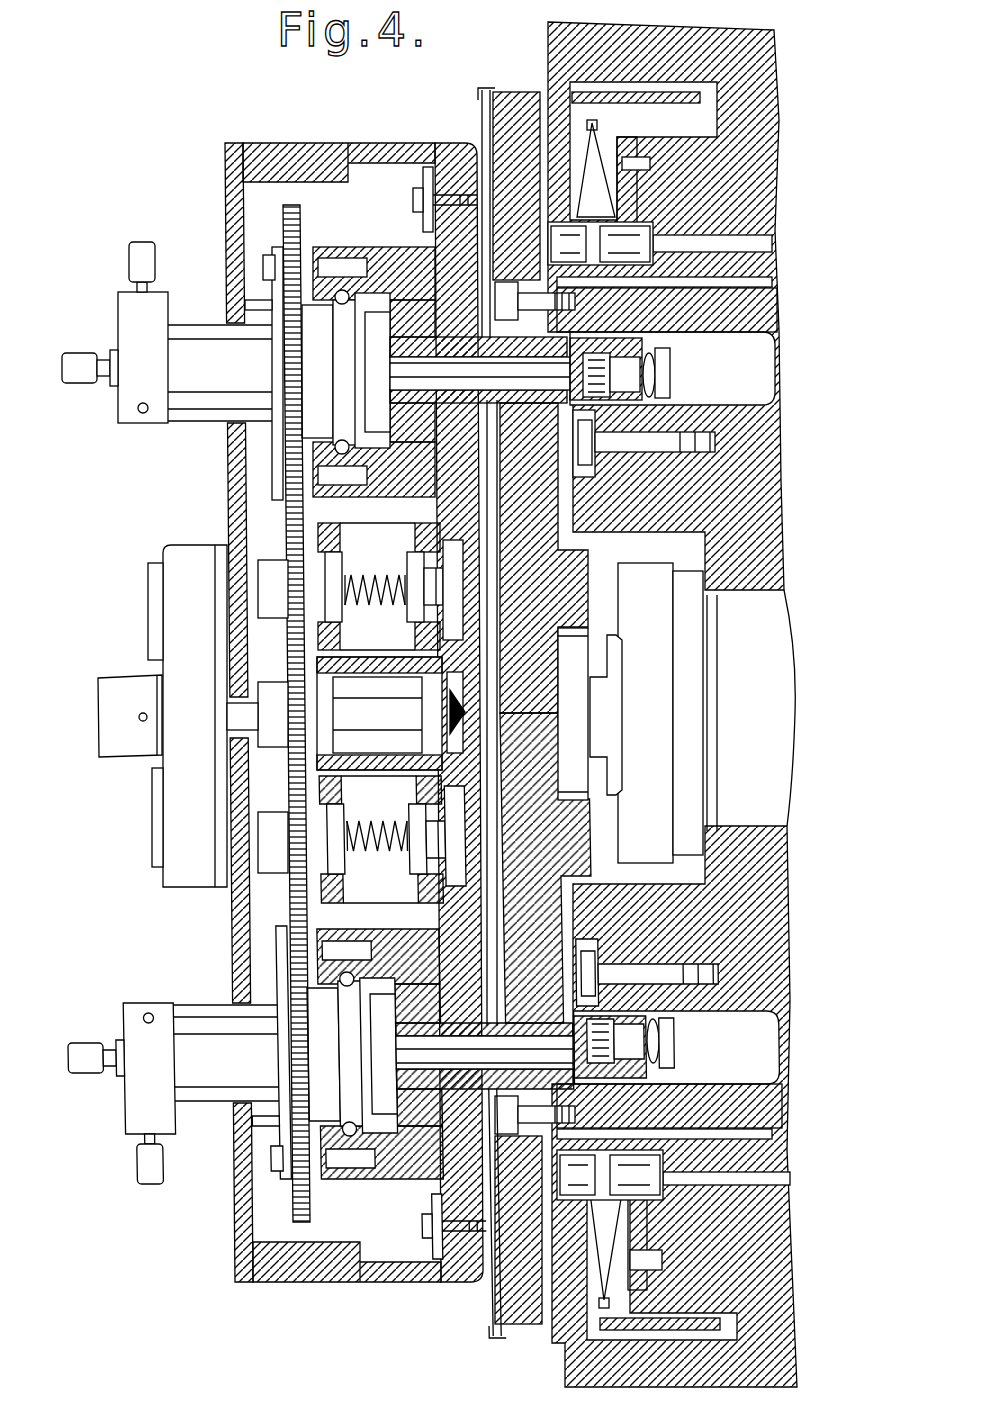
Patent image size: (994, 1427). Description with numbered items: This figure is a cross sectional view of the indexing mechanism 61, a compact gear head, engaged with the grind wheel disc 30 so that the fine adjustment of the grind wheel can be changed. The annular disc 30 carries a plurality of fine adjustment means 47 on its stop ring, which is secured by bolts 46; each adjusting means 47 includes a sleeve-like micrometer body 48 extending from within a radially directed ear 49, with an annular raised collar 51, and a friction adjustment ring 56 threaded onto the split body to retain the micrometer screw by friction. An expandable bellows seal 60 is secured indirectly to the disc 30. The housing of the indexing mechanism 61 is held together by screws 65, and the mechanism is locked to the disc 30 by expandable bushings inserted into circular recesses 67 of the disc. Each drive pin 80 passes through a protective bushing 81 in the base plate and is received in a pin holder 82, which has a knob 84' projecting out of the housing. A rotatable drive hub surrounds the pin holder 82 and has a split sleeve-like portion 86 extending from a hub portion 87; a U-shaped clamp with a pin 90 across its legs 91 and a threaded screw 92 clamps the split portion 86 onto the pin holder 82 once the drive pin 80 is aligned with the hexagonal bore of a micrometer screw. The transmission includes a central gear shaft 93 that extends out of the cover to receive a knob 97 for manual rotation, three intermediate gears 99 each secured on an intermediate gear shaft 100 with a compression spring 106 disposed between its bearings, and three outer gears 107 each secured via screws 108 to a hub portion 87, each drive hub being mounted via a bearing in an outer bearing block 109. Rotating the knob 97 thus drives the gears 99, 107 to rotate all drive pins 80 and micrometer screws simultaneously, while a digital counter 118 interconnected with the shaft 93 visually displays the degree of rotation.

The annular disc 30 is at (521, 90).
The bolts 46 is at (690, 448).
The fine adjustment means 47 is at (731, 381).
The micrometer body 48 is at (642, 380).
The ear 49 is at (582, 340).
The annular raised collar 51 is at (672, 368).
The friction adjustment ring 56 is at (672, 345).
The expandable bellows seal 60 is at (602, 142).
The indexing mechanism 61 is at (271, 130).
The screws 65 is at (413, 196).
The circular recesses 67 is at (522, 408).
The drive pin 80 is at (537, 380).
The protective bushing 81 is at (455, 347).
The pin holder 82 is at (195, 340).
The knob 84' is at (93, 691).
The split sleeve-like portion 86 is at (200, 422).
The hub portion 87 is at (272, 304).
The pin 90 is at (143, 414).
The legs 91 is at (160, 297).
The threaded screw 92 is at (150, 240).
The central gear shaft 93 is at (365, 716).
The knob 97 is at (112, 690).
The intermediate gears 99 is at (290, 536).
The intermediate gear shaft 100 is at (360, 602).
The compression spring 106 is at (376, 576).
The outer gears 107 is at (300, 208).
The screws 108 is at (270, 252).
The outer bearing block 109 is at (365, 256).
The digital counter 118 is at (169, 561).